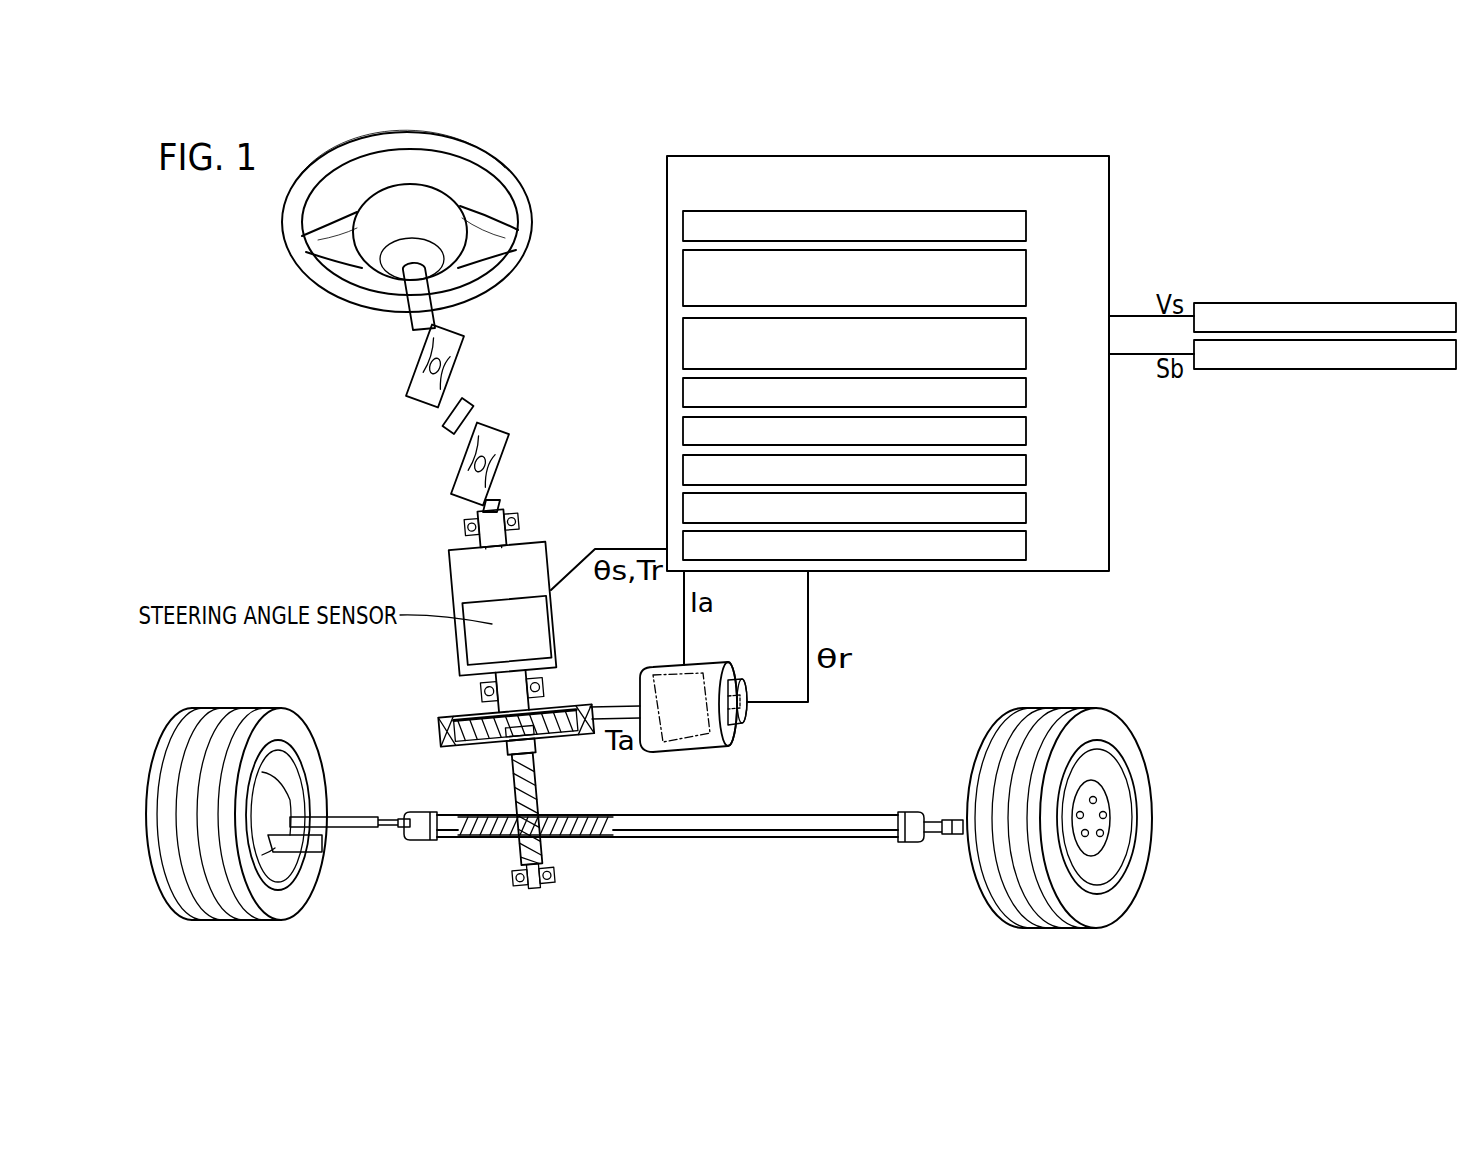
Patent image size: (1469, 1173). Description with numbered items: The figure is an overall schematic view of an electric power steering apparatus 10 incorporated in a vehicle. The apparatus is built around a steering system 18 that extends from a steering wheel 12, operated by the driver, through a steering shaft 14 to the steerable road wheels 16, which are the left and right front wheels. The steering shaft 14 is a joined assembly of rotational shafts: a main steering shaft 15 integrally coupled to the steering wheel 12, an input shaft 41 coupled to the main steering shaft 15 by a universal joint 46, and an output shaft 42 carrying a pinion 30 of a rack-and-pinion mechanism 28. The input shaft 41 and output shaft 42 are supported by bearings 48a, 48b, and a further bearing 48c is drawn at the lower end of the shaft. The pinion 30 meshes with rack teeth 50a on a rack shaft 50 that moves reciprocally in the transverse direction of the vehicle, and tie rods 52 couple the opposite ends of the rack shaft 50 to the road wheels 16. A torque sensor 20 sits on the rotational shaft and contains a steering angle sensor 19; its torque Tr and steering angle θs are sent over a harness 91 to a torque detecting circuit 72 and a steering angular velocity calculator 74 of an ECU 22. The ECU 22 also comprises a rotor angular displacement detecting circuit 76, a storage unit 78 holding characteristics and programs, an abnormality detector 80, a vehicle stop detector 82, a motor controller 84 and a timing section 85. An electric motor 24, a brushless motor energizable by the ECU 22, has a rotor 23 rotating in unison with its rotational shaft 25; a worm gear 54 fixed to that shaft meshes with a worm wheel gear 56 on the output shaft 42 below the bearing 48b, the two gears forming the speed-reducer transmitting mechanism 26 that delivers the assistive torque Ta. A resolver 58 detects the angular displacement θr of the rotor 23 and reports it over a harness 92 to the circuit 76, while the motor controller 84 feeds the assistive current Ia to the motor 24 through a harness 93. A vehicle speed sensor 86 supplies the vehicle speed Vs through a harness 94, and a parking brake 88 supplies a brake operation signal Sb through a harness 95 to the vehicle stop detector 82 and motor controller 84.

The electric power steering apparatus 10 is at (172, 289).
The steering wheel 12 is at (528, 212).
The steering shaft 14 is at (461, 418).
The main steering shaft 15 is at (413, 323).
The steerable road wheels 16 is at (280, 728).
The steering system 18 is at (426, 455).
The steering angle sensor 19 is at (465, 636).
The torque sensor 20 is at (455, 578).
The ECU 22 is at (888, 343).
The rotor 23 is at (700, 747).
The electric motor 24 is at (688, 737).
The rotational shaft 25 is at (610, 705).
The speed-reducer transmitting mechanism 26 is at (450, 718).
The rack-and-pinion mechanism 28 is at (664, 849).
The pinion 30 is at (537, 800).
The input shaft 41 is at (516, 541).
The output shaft 42 is at (508, 760).
The universal joint 46 is at (438, 400).
The bearing 48a is at (472, 527).
The bearing 48b is at (540, 690).
The bearing 48c is at (516, 879).
The rack shaft 50 is at (664, 849).
The rack teeth 50a is at (580, 838).
The tie rods 52 is at (353, 828).
The worm gear 54 is at (556, 745).
The worm wheel gear 56 is at (442, 742).
The resolver 58 is at (746, 712).
The torque detecting circuit 72 is at (1030, 228).
The steering angular velocity calculator 74 is at (1030, 293).
The rotor angular displacement detecting circuit 76 is at (1030, 357).
The storage unit 78 is at (1030, 393).
The abnormality detector 80 is at (1030, 432).
The vehicle stop detector 82 is at (1030, 471).
The motor controller 84 is at (1030, 508).
The timing section 85 is at (1030, 546).
The vehicle speed sensor 86 is at (1425, 303).
The parking brake 88 is at (1427, 370).
The harness 91 is at (626, 548).
The harness 92 is at (808, 612).
The harness 93 is at (683, 620).
The harness 94 is at (1127, 314).
The harness 95 is at (1130, 358).